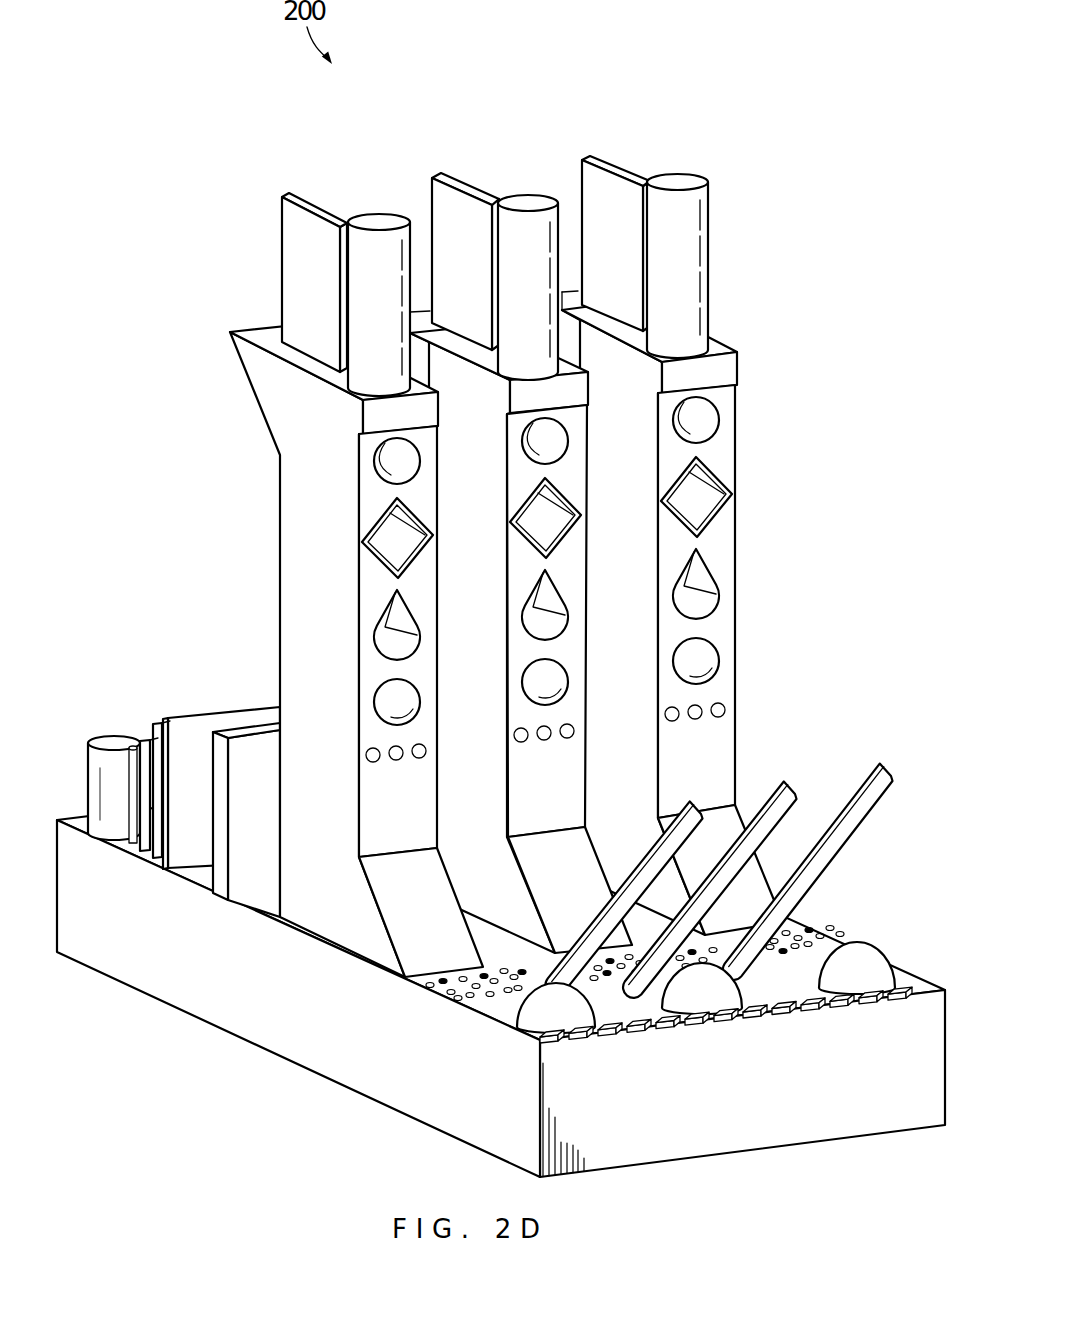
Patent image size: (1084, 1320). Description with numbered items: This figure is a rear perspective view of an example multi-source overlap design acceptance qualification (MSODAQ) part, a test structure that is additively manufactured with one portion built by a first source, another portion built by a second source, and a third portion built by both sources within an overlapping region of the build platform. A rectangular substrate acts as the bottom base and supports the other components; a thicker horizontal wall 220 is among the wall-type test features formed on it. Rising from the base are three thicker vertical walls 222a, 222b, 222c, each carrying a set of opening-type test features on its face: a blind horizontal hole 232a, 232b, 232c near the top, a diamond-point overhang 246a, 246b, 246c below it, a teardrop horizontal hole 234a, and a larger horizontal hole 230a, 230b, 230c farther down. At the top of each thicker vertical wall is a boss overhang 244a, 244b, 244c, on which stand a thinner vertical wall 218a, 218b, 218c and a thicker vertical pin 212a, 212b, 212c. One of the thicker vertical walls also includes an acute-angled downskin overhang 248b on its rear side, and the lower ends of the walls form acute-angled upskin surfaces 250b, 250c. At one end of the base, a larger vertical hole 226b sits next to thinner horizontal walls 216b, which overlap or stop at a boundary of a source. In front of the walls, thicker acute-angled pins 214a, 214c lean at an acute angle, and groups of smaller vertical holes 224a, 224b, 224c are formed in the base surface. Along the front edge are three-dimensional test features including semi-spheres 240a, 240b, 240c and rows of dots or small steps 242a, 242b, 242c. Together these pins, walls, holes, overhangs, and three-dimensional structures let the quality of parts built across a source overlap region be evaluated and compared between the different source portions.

The thicker vertical pin 212a is at (708, 223).
The thicker vertical pin 212b is at (373, 217).
The thicker vertical pin 212c is at (526, 196).
The thicker acute-angled pin 214a is at (908, 748).
The thicker acute-angled pin 214c is at (812, 762).
The thinner horizontal wall 216b is at (200, 713).
The thinner vertical wall 218a is at (616, 168).
The thinner vertical wall 218b is at (281, 222).
The thinner vertical wall 218c is at (455, 176).
The thicker horizontal wall 220 is at (207, 877).
The thicker vertical wall 222a is at (695, 524).
The thicker vertical wall 222b is at (323, 574).
The thicker vertical wall 222c is at (530, 538).
The smaller vertical hole 224a is at (822, 942).
The smaller vertical hole 224b is at (440, 985).
The smaller vertical hole 224c is at (615, 962).
The larger vertical hole 226b is at (116, 742).
The larger horizontal hole 230a is at (707, 663).
The larger horizontal hole 230b is at (373, 698).
The larger horizontal hole 230c is at (523, 680).
The blind horizontal hole 232a is at (708, 423).
The blind horizontal hole 232b is at (390, 472).
The blind horizontal hole 232c is at (582, 442).
The teardrop horizontal hole 234a is at (712, 603).
The semi-sphere 240a is at (912, 940).
The semi-sphere 240b is at (522, 1027).
The semi-sphere 240c is at (745, 995).
The dots or small steps 242a is at (912, 1002).
The dots or small steps 242b is at (540, 1052).
The dots or small steps 242c is at (744, 1020).
The boss overhang 244a is at (730, 363).
The boss overhang 244b is at (373, 417).
The boss overhang 244c is at (523, 412).
The diamond-point overhang 246a is at (722, 520).
The diamond-point overhang 246b is at (383, 560).
The diamond-point overhang 246c is at (580, 547).
The acute-angled downskin overhang 248b is at (257, 400).
The acute-angled upskin surface 250b is at (405, 935).
The acute-angled upskin surface 250c is at (558, 842).